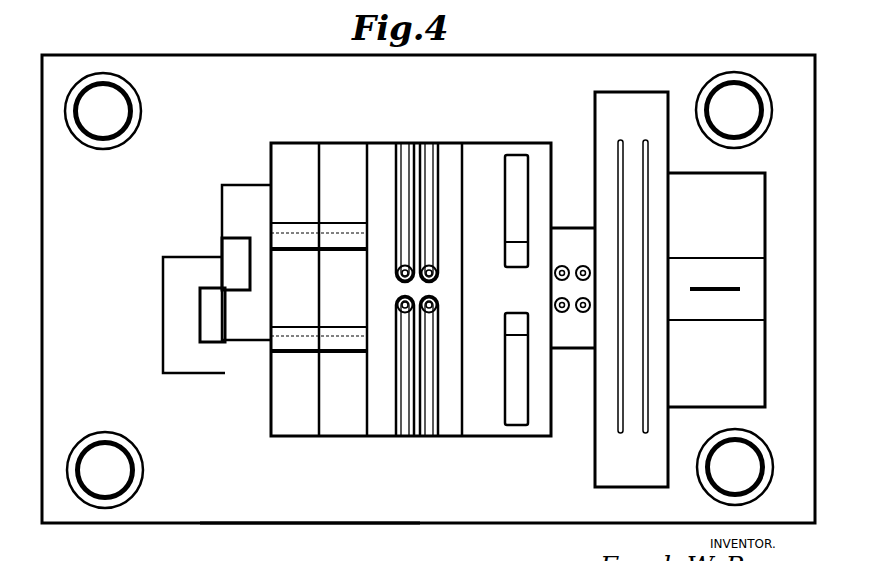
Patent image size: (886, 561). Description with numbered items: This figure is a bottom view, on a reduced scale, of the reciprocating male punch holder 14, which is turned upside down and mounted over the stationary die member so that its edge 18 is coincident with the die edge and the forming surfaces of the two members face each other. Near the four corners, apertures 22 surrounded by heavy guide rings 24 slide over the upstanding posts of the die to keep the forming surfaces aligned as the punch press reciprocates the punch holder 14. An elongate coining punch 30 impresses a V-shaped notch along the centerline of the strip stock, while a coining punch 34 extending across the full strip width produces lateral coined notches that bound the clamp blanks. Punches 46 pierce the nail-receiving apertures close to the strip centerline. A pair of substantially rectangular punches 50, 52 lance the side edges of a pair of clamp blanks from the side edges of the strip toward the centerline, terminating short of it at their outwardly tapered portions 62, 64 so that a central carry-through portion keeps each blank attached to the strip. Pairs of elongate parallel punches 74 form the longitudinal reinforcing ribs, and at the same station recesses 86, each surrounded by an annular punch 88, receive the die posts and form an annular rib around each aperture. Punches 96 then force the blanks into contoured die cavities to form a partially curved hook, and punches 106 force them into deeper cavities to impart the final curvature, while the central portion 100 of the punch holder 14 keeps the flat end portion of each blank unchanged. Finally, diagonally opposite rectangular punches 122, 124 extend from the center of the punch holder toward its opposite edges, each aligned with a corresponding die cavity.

The punch holder 14 is at (114, 54).
The edge of the punch holder 18 is at (195, 524).
The apertures 22 is at (95, 135).
The guide rings 24 is at (138, 102).
The coining punch 30 is at (714, 285).
The coining punch 34 is at (645, 152).
The punches 46 is at (583, 265).
The rectangular punch 50 is at (512, 189).
The rectangular punch 52 is at (512, 377).
The outwardly tapered portion 62 is at (512, 245).
The outwardly tapered portion 64 is at (512, 332).
The elongate parallel punches 74 is at (413, 437).
The recesses 86 is at (437, 276).
The annular punch 88 is at (431, 312).
The punches 96 is at (347, 232).
The portion of the punch holder 100 is at (356, 309).
The punches 106 is at (300, 232).
The rectangular punch 122 is at (236, 255).
The rectangular punch 124 is at (208, 315).